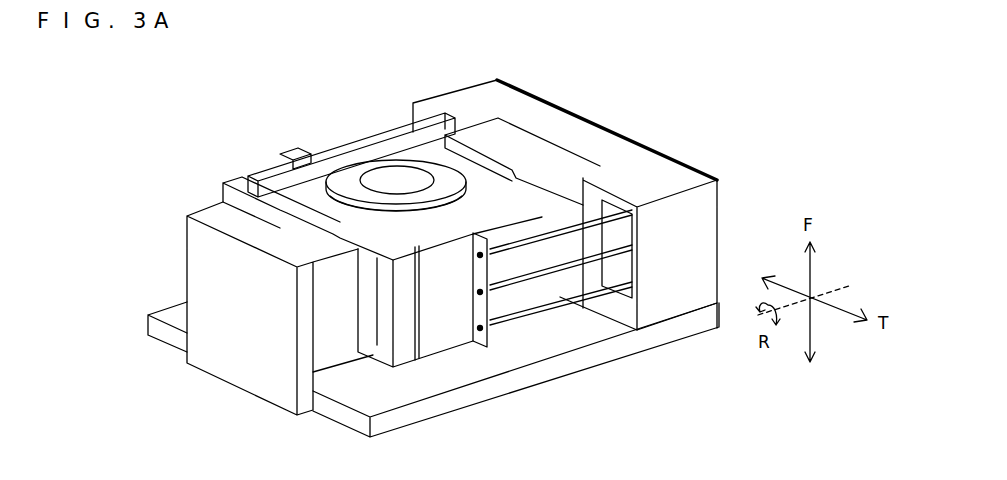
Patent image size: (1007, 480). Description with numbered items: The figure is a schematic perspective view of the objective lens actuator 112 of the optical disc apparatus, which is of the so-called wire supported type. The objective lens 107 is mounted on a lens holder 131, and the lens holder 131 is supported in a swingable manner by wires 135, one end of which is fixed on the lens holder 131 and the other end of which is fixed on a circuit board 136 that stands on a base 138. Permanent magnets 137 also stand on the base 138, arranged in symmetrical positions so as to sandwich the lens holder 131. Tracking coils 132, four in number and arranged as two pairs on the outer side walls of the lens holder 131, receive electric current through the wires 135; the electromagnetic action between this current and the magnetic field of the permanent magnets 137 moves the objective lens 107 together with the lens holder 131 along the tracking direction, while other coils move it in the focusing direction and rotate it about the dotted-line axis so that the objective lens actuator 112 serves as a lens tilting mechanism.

The objective lens 107 is at (440, 170).
The objective lens actuator 112 is at (825, 62).
The lens holder 131 is at (317, 177).
The tracking coils 132 is at (375, 348).
The wires 135 is at (605, 283).
The circuit board 136 is at (633, 138).
The permanent magnets 137 is at (250, 218).
The base 138 is at (597, 363).